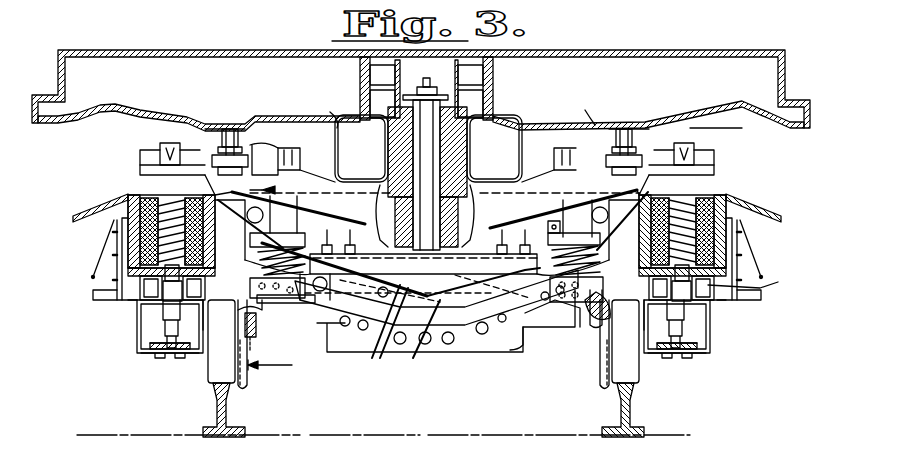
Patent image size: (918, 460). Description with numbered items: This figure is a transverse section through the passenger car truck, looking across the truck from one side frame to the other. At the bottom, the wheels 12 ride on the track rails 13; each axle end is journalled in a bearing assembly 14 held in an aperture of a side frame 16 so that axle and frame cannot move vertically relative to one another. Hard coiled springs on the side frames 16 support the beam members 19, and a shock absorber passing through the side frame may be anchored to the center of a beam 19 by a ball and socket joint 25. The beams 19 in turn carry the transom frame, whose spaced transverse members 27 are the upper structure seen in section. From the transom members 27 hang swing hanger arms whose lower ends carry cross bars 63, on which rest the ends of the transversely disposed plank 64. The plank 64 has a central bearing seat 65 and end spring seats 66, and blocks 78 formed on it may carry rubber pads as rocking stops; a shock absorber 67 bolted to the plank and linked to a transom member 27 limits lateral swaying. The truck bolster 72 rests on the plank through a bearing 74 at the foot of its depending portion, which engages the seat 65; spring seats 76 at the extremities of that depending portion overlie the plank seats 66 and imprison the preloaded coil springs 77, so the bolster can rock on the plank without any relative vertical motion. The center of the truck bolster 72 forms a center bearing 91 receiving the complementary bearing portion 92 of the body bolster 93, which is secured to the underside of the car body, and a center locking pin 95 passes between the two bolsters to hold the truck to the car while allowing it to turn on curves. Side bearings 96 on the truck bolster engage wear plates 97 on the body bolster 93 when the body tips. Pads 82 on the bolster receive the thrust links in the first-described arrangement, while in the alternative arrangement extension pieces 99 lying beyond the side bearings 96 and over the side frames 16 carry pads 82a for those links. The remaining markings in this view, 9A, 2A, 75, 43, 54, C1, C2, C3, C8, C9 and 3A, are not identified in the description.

The cover 9A is at (246, 50).
The center locking pin 95 is at (390, 136).
The center bearing 91 is at (368, 178).
The complementary bearing portion 92 is at (466, 180).
The section line 3A is at (444, 277).
The lever arm 75 is at (434, 209).
The transom frame members 27 is at (180, 192).
The bearing assembly 14 is at (93, 288).
The beam members 19 is at (118, 308).
The shaft 2A is at (165, 333).
The side frames 16 is at (152, 356).
The wheels 12 is at (240, 374).
The track rails 13 is at (232, 408).
The link 43 is at (238, 330).
The spring seats 66 is at (292, 322).
The plate 54 is at (270, 340).
The cross bars 63 is at (252, 340).
The coil springs 77 is at (418, 265).
The link C8 is at (351, 272).
The link C9 is at (483, 278).
The blocks 78 is at (436, 311).
The plank 64 is at (522, 330).
The lever C3 is at (588, 340).
The shock absorbers 67 is at (372, 328).
The bearing 74 is at (391, 330).
The bearing seat 65 is at (409, 329).
The roller C1 is at (250, 208).
The spring seats 76 is at (280, 233).
The spring C2 is at (256, 248).
The ball and socket joint 25 is at (753, 280).
The side bearings 96 is at (227, 130).
The wear plates 97 is at (205, 130).
The body bolster 93 is at (690, 128).
The truck bolster 72 is at (264, 152).
The pads 82 is at (447, 114).
The pads 82a is at (158, 148).
The extension pieces 99 is at (140, 158).